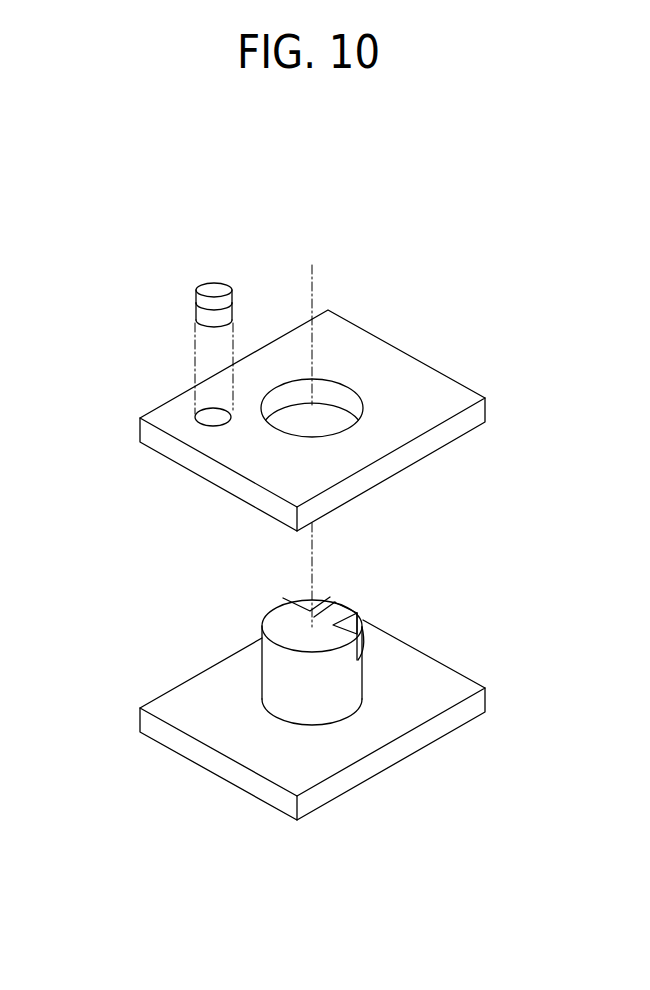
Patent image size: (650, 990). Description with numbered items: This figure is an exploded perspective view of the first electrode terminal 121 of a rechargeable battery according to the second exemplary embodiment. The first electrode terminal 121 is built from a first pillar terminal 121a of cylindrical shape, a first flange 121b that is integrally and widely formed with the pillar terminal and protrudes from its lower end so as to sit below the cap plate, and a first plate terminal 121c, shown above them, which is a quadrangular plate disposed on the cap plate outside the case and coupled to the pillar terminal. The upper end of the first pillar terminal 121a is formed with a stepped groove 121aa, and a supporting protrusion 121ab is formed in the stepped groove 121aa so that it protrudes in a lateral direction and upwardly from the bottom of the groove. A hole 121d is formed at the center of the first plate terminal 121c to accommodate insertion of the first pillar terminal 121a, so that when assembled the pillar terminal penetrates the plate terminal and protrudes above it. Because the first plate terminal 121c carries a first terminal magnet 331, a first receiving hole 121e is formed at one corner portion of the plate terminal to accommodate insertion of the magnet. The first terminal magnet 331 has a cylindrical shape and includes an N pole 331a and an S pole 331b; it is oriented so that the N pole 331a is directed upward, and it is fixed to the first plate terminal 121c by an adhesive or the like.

The first electrode terminal 121 is at (358, 298).
The first pillar terminal 121a is at (282, 618).
The stepped groove 121aa is at (360, 616).
The supporting protrusion 121ab is at (338, 608).
The first flange 121b is at (433, 678).
The first plate terminal 121c is at (368, 358).
The hole 121d is at (352, 403).
The first receiving hole 121e is at (215, 417).
The first terminal magnet 331 is at (89, 273).
The N pole 331a is at (197, 287).
The S pole 331b is at (197, 317).